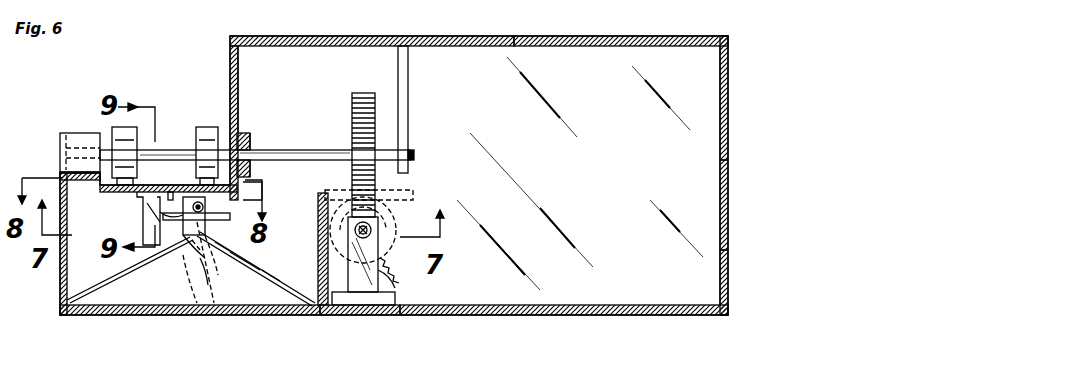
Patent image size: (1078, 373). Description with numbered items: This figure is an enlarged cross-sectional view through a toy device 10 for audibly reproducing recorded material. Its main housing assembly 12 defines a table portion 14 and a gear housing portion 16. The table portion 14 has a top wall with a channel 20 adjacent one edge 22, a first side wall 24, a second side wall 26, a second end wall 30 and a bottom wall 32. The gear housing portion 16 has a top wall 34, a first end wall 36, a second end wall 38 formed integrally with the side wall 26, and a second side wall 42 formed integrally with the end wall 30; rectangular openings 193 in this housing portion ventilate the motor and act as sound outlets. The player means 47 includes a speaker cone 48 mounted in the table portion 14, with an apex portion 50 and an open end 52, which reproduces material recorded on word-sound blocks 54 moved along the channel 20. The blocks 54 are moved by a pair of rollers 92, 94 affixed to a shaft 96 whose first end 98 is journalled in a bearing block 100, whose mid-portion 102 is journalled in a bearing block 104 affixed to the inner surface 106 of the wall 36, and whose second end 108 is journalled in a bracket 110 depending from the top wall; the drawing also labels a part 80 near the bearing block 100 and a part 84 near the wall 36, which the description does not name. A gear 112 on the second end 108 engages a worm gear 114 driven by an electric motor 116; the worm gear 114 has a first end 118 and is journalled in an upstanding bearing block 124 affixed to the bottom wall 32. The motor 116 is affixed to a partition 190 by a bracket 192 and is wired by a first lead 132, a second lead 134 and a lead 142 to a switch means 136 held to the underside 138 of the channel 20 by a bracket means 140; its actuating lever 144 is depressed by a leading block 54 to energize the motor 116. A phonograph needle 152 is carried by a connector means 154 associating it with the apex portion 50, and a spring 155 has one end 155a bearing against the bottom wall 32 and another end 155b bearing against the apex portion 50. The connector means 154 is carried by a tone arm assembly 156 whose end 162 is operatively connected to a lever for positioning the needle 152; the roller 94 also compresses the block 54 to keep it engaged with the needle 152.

The toy device 10 is at (712, 30).
The main housing assembly 12 is at (703, 183).
The table portion 14 is at (730, 244).
The gear housing portion 16 is at (514, 37).
The channel 20 is at (122, 218).
The edge 22 is at (65, 175).
The first side wall 24 is at (60, 277).
The second side wall 26 is at (730, 206).
The second end wall 30 is at (525, 287).
The bottom wall 32 is at (285, 316).
The top wall 34 is at (597, 37).
The first end wall 36 is at (240, 123).
The second end wall 38 is at (730, 110).
The second side wall 42 is at (608, 141).
The player means 47 is at (275, 268).
The speaker cone 48 is at (252, 265).
The apex portion 50 is at (240, 265).
The open end 52 is at (330, 316).
The word-sound blocks 54 is at (192, 165).
The bearing bushing 80 is at (120, 176).
The support bracket 84 is at (264, 186).
The roller 92 is at (132, 128).
The roller 94 is at (212, 127).
The shaft 96 is at (278, 150).
The first end 98 is at (66, 134).
The bearing block 100 is at (60, 135).
The mid-portion 102 is at (257, 163).
The bearing block 104 is at (248, 142).
The inner surface 106 is at (260, 130).
The second end 108 is at (385, 157).
The bracket 110 is at (408, 106).
The gear 112 is at (365, 92).
The worm gear 114 is at (375, 235).
The electric motor 116 is at (382, 266).
The first end 118 is at (380, 236).
The bearing block 124 is at (395, 288).
The first lead 132 is at (412, 270).
The second lead 134 is at (195, 262).
The switch means 136 is at (145, 214).
The underside 138 is at (106, 182).
The bracket means 140 is at (137, 283).
The lead 142 is at (363, 298).
The actuating lever 144 is at (172, 185).
The phonograph needle 152 is at (220, 208).
The connector means 154 is at (257, 242).
The spring 155 is at (218, 308).
The spring end 155a is at (205, 305).
The spring end 155b is at (213, 252).
The tone arm assembly 156 is at (198, 248).
The end 162 is at (207, 262).
The partition 190 is at (325, 202).
The bracket 192 is at (415, 191).
The rectangular openings 193 is at (318, 30).